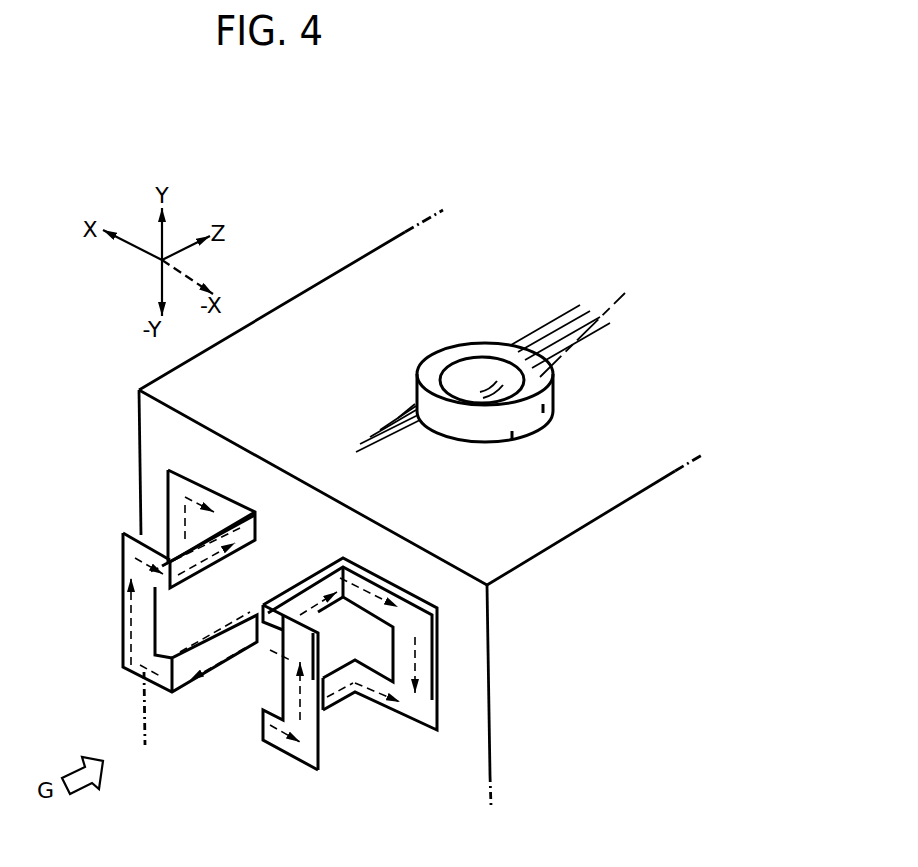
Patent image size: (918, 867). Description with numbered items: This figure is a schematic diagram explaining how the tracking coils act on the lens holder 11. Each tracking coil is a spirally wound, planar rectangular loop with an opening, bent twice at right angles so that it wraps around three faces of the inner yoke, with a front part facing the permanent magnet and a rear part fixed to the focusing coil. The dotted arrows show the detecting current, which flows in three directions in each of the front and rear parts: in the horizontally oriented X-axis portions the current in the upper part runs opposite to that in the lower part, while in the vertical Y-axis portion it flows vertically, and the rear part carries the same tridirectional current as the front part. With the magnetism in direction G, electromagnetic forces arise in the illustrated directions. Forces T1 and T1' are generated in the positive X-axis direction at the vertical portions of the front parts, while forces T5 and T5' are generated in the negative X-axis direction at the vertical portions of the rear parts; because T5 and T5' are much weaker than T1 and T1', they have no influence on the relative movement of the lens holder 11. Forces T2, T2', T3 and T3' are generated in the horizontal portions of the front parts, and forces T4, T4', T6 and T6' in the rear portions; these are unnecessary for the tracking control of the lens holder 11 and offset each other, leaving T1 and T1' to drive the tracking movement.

The lens holder 11 is at (567, 493).
The electromagnetic force T1 is at (158, 612).
The electromagnetic force T2 is at (129, 535).
The electromagnetic force T3 is at (133, 693).
The electromagnetic force T4 is at (208, 522).
The electromagnetic force T5 is at (192, 534).
The electromagnetic force T6 is at (215, 638).
The electromagnetic force T1' is at (278, 687).
The electromagnetic force T2' is at (277, 608).
The electromagnetic force T3' is at (285, 769).
The electromagnetic force T4' is at (350, 641).
The electromagnetic force T5' is at (452, 667).
The electromagnetic force T6' is at (365, 726).